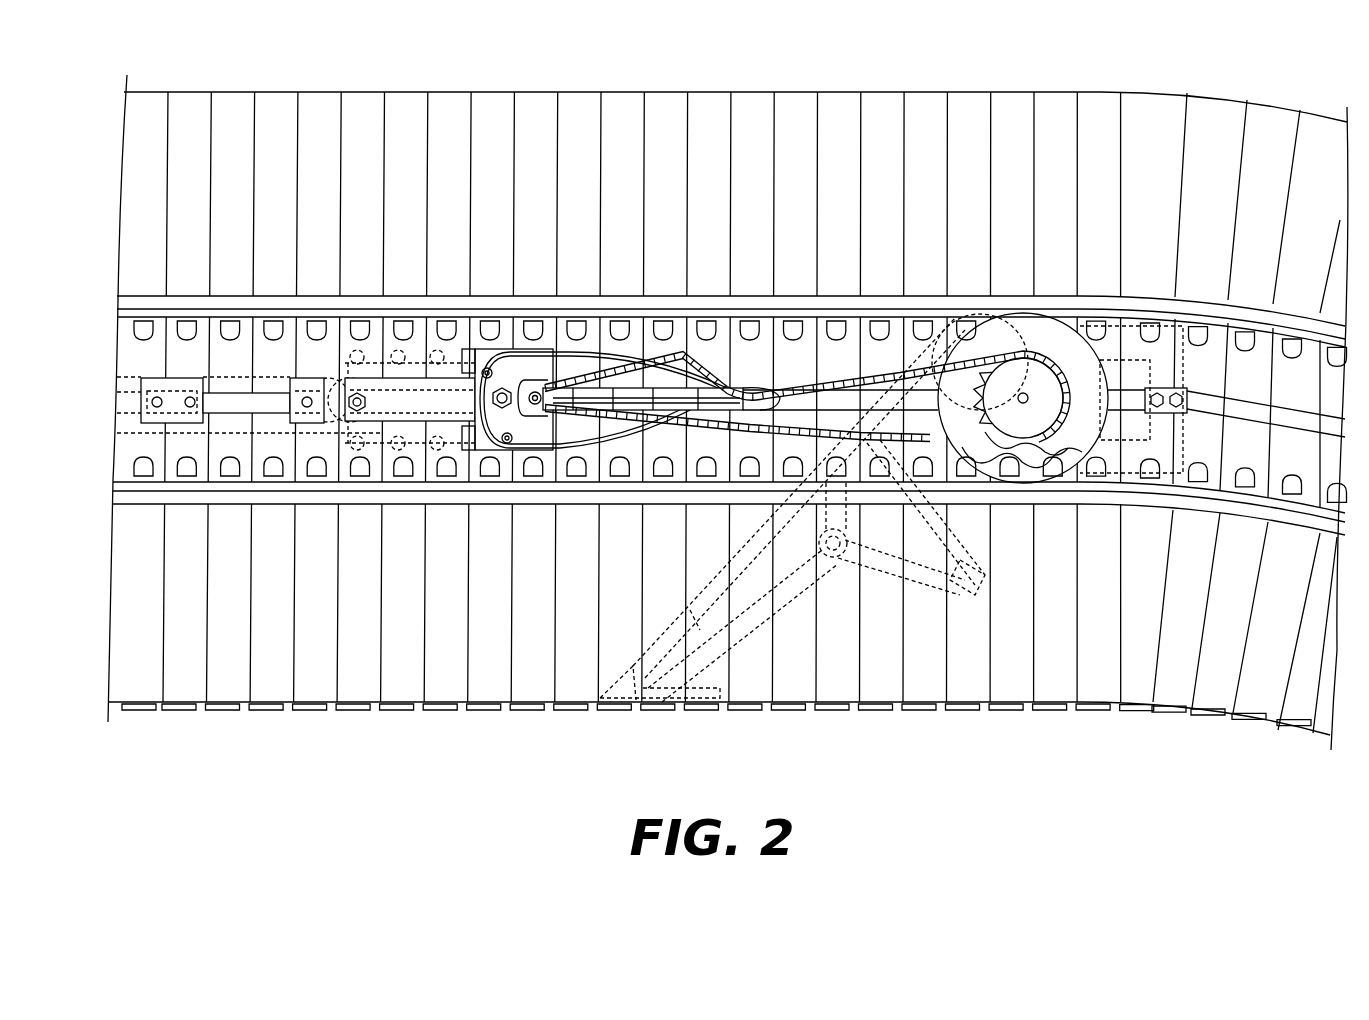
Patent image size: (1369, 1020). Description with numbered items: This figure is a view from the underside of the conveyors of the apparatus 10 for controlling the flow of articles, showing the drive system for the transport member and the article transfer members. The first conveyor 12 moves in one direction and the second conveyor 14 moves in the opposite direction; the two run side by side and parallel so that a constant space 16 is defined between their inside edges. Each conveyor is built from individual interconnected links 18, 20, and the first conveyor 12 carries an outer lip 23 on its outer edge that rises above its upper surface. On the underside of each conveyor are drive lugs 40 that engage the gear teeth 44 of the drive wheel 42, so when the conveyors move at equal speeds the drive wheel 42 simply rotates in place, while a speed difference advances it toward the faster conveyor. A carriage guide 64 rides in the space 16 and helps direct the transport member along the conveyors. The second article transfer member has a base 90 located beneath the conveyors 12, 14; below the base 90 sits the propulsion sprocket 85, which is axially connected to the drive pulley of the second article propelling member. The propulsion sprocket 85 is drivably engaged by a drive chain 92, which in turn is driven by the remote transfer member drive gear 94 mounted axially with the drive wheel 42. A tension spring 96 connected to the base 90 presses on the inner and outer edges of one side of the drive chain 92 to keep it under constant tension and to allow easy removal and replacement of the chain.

The apparatus 10 is at (232, 738).
The first conveyor 12 is at (400, 686).
The second conveyor 14 is at (590, 84).
The space 16 is at (1303, 420).
The link 18 is at (530, 686).
The link 20 is at (712, 120).
The outer lip 23 is at (698, 712).
The drive lugs 40 is at (137, 467).
The drive wheel 42 is at (1072, 456).
The gear teeth 44 is at (1036, 462).
The carriage guide 64 is at (1182, 412).
The propulsion sprocket 85 is at (578, 357).
The base 90 is at (487, 358).
The drive chain 92 is at (735, 385).
The remote transfer member drive gear 94 is at (1022, 392).
The tension spring 96 is at (617, 350).